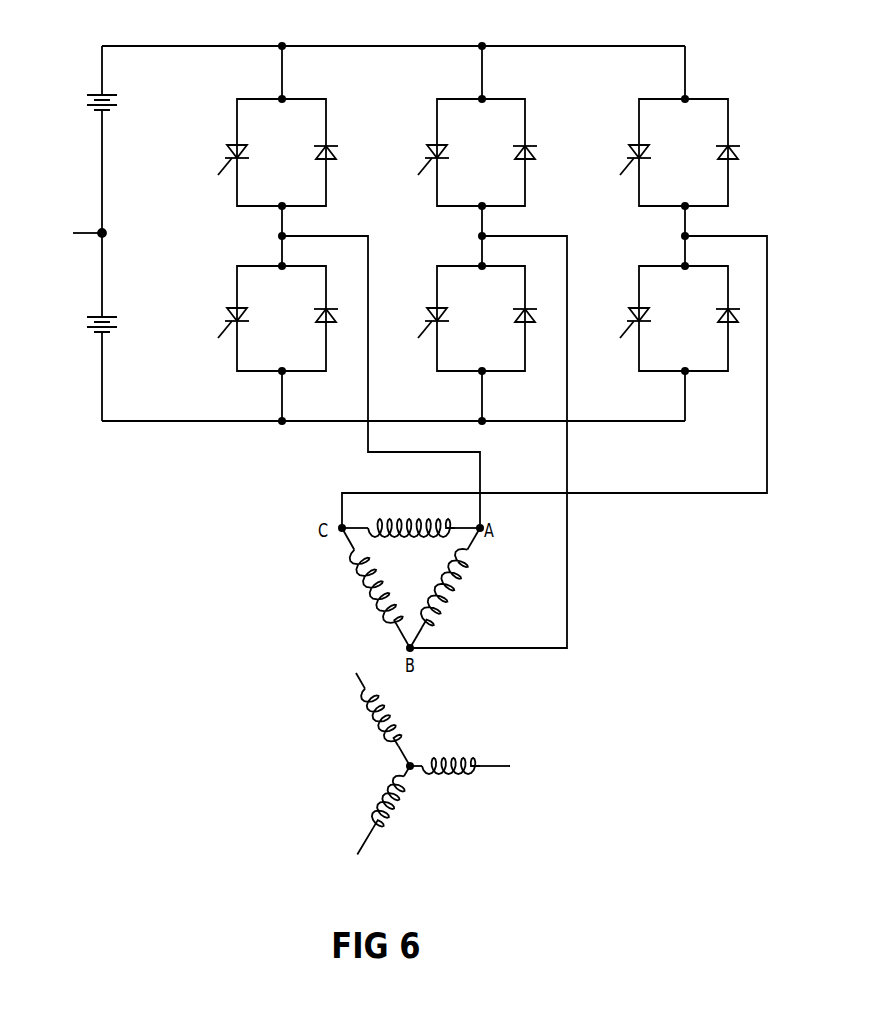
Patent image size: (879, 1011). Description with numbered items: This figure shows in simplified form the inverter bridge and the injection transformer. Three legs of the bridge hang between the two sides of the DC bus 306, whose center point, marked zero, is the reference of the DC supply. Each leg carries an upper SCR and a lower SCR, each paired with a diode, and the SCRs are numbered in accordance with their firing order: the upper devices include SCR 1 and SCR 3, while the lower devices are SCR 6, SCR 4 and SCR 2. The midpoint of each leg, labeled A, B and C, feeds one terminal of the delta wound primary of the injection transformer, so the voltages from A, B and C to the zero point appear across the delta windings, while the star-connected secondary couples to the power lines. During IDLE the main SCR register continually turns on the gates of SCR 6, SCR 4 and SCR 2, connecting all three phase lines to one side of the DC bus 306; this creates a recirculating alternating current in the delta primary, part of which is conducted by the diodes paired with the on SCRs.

The DC bus 306 is at (148, 46).
The SCR 1 is at (281, 152).
The SCR 3 is at (481, 152).
The SCR 4 is at (271, 318).
The SCR 6 is at (677, 318).
The SCR 2 is at (435, 765).